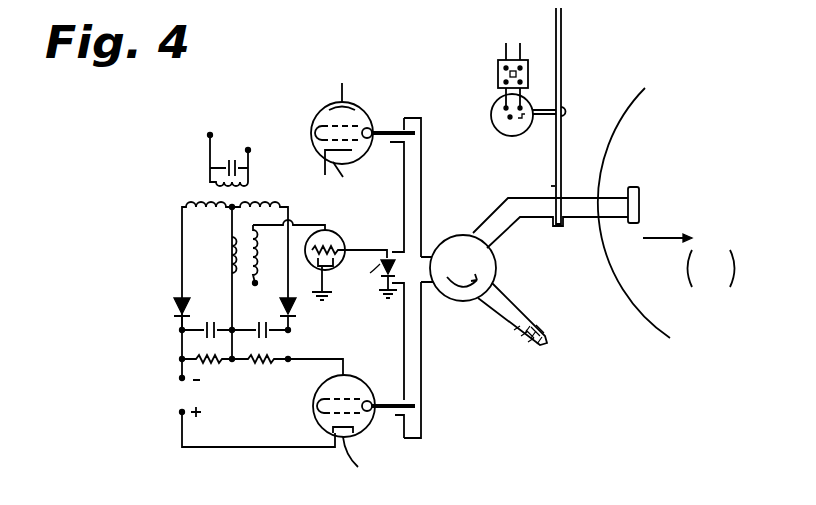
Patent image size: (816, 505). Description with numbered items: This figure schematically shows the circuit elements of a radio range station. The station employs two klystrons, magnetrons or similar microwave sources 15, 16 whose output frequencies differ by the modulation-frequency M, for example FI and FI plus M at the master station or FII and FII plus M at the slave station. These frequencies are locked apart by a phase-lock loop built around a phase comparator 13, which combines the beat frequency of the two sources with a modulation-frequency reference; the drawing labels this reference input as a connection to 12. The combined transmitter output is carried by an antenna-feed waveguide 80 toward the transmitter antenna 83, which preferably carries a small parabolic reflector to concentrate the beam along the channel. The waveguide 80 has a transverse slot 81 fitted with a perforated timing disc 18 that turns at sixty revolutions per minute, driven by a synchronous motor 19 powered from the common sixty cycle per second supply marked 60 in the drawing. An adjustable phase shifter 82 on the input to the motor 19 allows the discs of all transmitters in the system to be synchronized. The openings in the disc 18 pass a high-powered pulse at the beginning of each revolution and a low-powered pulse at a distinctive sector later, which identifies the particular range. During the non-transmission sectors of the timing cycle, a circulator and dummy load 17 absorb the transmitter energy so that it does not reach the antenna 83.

The transformer primary (to element 12) 12 is at (232, 148).
The phase comparator 13 is at (213, 259).
The microwave source 15 is at (368, 113).
The microwave source 16 is at (355, 375).
The circulator and dummy load 17 is at (500, 290).
The timing disc 18 is at (562, 50).
The synchronous motor 19 is at (491, 117).
The 60 cycle supply 60 is at (516, 41).
The antenna-feed waveguide 80 is at (502, 238).
The transverse slot 81 is at (553, 188).
The adjustable phase shifter 82 is at (498, 73).
The transmitter antenna 83 is at (675, 155).